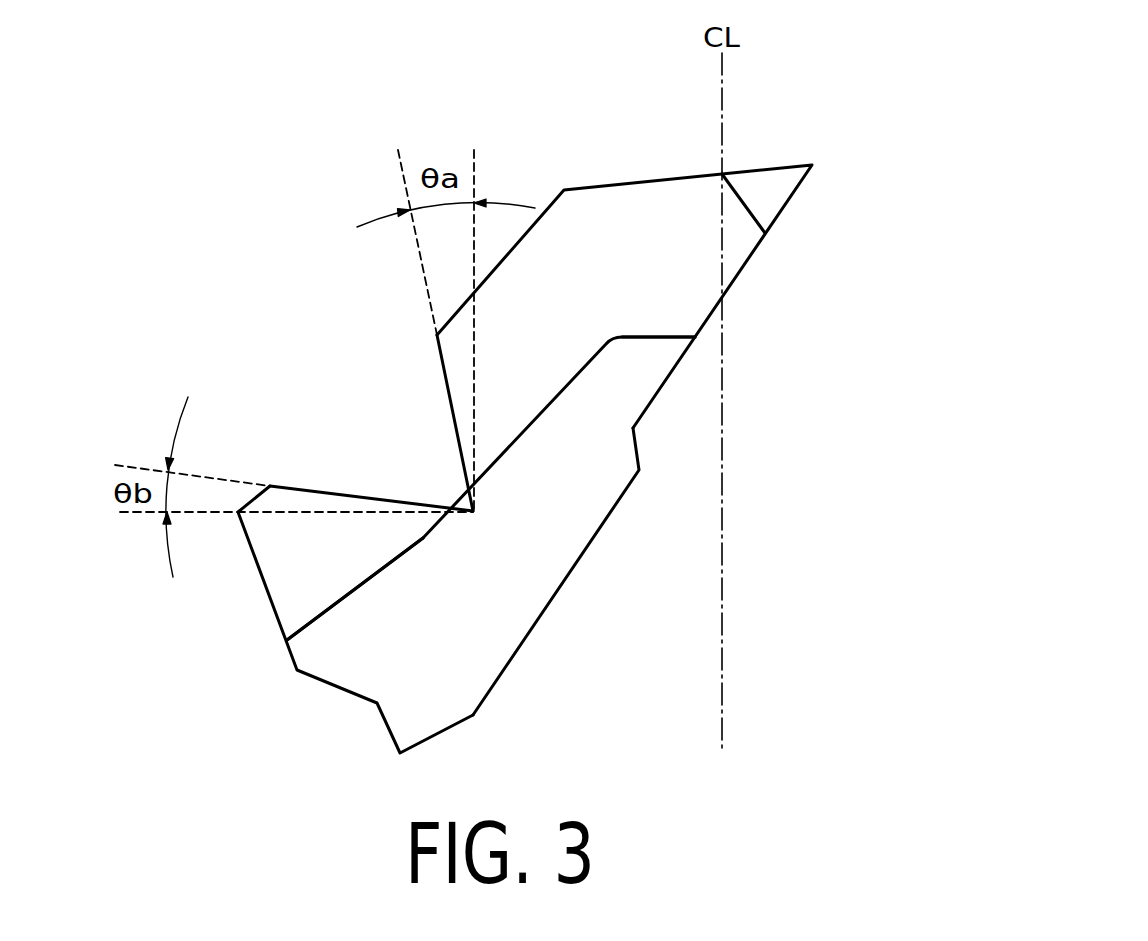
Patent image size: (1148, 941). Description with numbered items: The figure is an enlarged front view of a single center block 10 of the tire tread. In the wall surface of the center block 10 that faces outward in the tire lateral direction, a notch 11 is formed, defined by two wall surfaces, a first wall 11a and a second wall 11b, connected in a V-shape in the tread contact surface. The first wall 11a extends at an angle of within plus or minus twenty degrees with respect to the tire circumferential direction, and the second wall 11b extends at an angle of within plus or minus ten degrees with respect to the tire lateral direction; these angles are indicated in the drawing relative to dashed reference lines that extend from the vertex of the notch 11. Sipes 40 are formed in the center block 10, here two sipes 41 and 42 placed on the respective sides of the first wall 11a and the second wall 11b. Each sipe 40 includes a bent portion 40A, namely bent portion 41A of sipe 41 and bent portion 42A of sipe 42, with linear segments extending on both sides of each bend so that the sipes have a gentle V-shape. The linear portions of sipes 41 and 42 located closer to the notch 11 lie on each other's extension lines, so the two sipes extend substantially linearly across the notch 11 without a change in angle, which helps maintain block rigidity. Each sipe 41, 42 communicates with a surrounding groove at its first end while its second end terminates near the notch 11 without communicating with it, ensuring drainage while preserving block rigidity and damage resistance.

The center block 10 is at (642, 195).
The notch 11 is at (365, 419).
The first wall 11a is at (452, 417).
The second wall 11b is at (388, 445).
The sipe 40 is at (466, 545).
The sipe 41 is at (507, 452).
The sipe 42 is at (347, 598).
The bent portion 40A is at (586, 510).
The bent portion 41A is at (612, 340).
The bent portion 42A is at (423, 538).